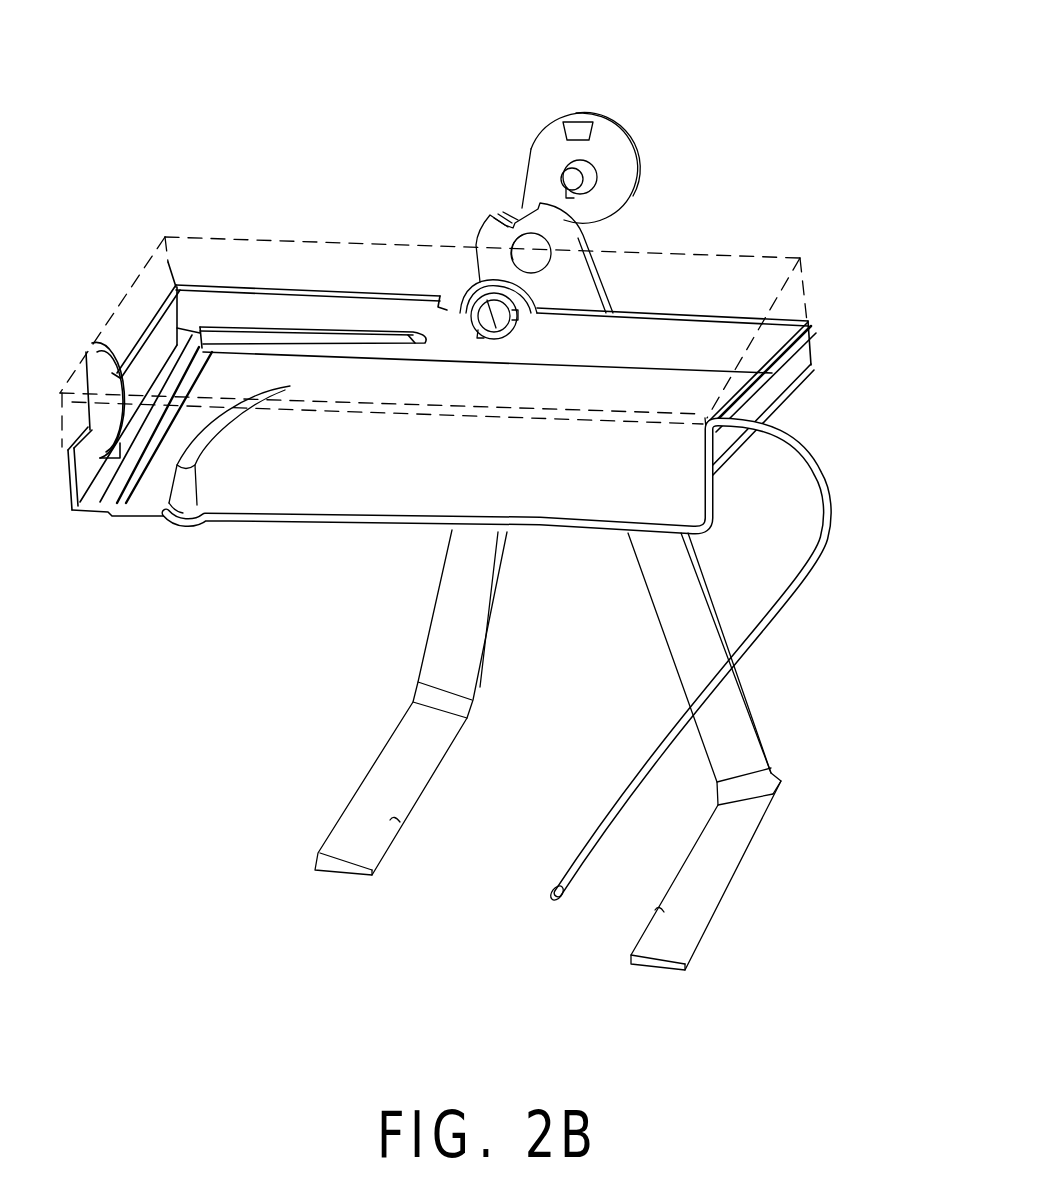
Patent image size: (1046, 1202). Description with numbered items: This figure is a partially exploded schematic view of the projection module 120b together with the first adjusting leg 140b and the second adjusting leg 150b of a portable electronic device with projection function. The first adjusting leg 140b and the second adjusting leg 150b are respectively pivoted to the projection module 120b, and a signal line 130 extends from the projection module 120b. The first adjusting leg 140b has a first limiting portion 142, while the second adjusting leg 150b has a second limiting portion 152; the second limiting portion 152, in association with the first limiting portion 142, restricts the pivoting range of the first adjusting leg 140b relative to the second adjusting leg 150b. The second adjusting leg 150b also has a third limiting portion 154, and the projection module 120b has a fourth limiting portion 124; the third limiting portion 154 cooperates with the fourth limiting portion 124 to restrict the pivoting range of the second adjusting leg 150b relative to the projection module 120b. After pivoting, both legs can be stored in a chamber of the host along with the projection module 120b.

The projection module 120b is at (232, 240).
The fourth limiting portion 124 is at (480, 290).
The first limiting portion 142 is at (511, 219).
The second limiting portion 152 is at (577, 128).
The third limiting portion 154 is at (577, 177).
The signal line 130 is at (783, 603).
The second adjusting leg 150b is at (457, 575).
The first adjusting leg 140b is at (669, 595).